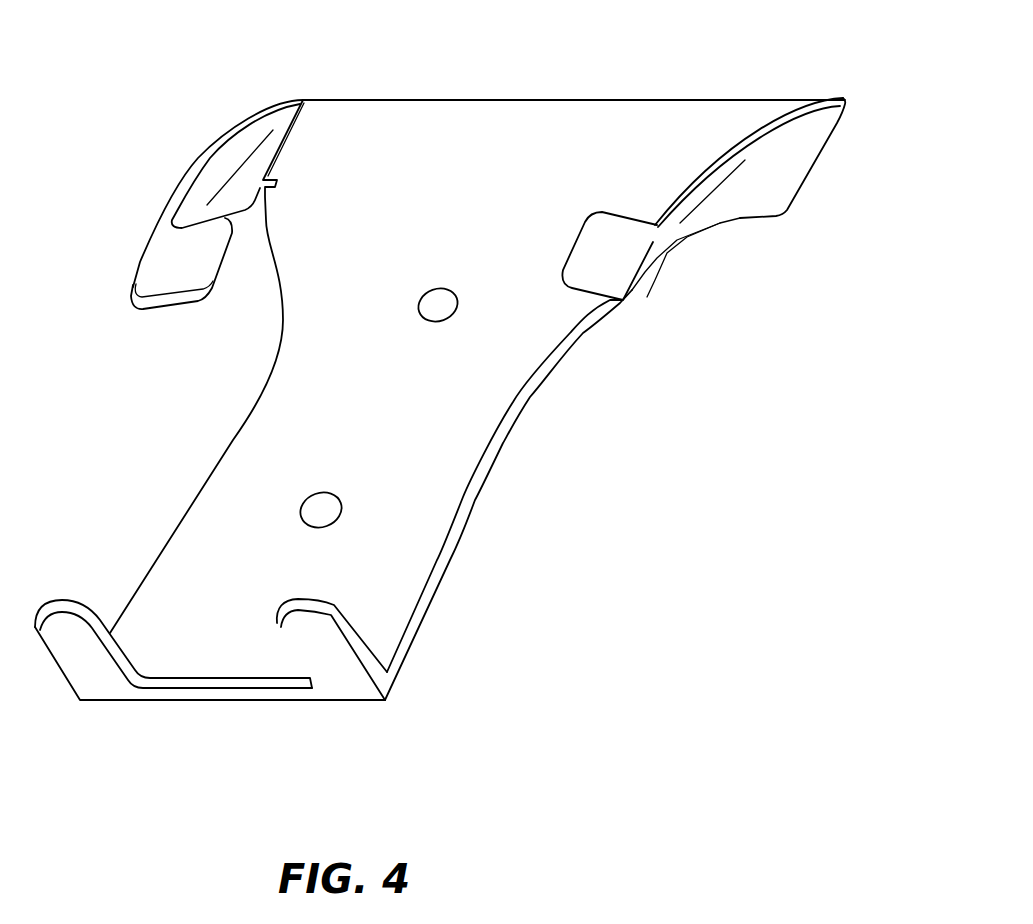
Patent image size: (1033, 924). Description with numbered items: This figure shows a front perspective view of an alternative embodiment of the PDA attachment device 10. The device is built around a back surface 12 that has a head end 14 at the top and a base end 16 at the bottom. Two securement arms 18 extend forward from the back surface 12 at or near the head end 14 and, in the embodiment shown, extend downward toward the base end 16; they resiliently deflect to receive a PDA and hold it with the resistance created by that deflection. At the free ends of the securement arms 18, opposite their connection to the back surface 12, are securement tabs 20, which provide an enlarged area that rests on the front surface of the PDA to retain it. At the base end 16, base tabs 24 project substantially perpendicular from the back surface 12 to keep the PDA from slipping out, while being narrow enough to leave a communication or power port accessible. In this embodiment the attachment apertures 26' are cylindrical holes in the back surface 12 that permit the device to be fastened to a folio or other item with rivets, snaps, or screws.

The PDA attachment device 10 is at (464, 388).
The back surface 12 is at (553, 333).
The head end 14 is at (556, 85).
The base end 16 is at (410, 635).
The securement arms 18 is at (235, 150).
The securement tabs 20 is at (170, 273).
The base tabs 24 is at (320, 650).
The attachment apertures 26' is at (439, 408).